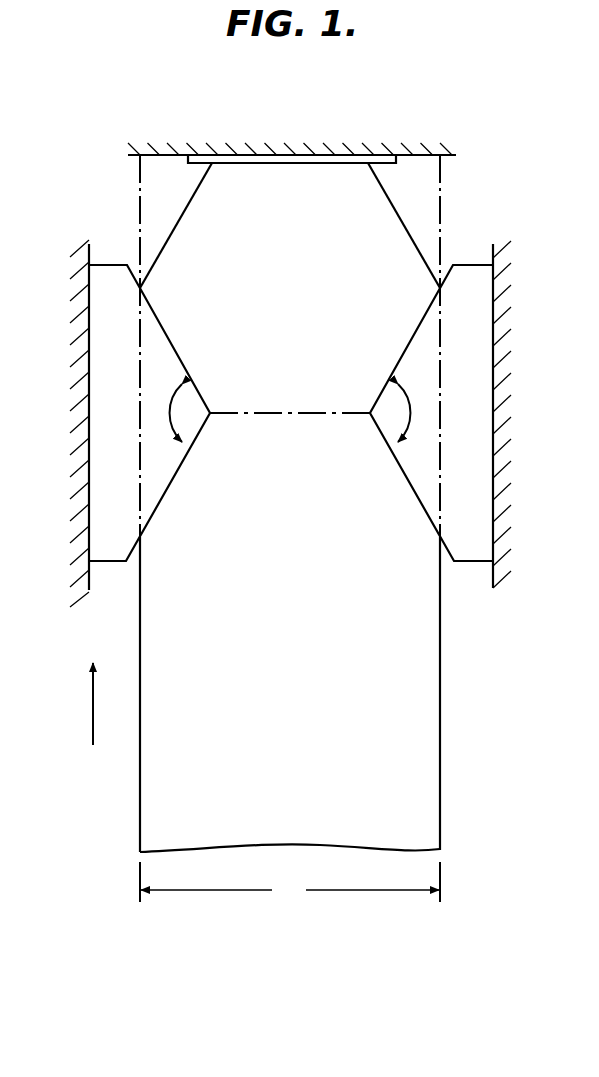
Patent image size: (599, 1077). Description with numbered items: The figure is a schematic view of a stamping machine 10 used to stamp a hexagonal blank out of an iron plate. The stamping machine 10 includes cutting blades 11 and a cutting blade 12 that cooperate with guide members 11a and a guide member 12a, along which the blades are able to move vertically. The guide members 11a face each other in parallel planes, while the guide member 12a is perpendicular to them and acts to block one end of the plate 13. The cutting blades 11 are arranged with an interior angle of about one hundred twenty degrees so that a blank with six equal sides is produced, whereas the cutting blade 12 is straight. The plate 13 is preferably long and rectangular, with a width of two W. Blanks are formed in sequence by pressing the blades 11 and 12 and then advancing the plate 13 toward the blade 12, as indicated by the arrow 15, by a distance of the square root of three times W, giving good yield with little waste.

The stamping machine 10 is at (427, 108).
The cutting blades 11 is at (112, 553).
The guide members 11a is at (92, 246).
The cutting blade 12 is at (392, 165).
The guide member 12a is at (441, 153).
The iron plate 13 is at (420, 718).
The arrow 15 is at (90, 712).